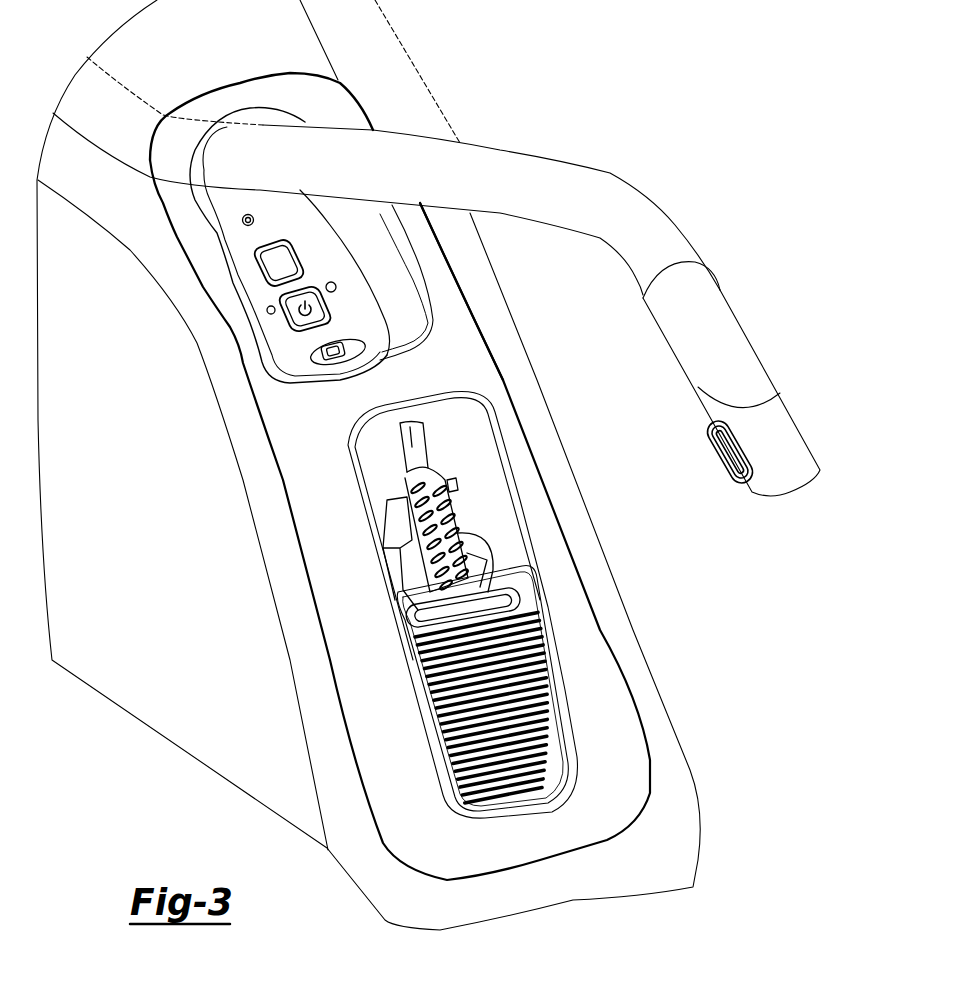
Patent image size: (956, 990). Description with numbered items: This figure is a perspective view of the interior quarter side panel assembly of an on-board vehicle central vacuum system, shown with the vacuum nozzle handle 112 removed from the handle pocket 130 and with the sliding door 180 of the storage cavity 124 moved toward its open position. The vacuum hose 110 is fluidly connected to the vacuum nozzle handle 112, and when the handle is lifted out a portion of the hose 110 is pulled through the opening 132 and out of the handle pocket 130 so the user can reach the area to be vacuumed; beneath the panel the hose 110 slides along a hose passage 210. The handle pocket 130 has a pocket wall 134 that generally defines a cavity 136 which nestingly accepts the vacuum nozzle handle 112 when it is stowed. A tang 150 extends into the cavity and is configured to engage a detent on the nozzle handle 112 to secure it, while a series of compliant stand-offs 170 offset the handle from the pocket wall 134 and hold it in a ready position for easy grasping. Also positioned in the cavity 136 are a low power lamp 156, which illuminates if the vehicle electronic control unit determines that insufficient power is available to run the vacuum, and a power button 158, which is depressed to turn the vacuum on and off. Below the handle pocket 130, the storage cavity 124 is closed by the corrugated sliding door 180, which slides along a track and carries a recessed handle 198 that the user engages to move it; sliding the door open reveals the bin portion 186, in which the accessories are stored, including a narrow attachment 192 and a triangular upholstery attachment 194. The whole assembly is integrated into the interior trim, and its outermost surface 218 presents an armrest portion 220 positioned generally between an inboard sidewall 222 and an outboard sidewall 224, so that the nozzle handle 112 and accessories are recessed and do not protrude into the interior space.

The vacuum hose 110 is at (627, 203).
The vacuum nozzle handle 112 is at (713, 313).
The storage cavity 124 is at (513, 547).
The handle pocket 130 is at (413, 300).
The opening 132 is at (437, 340).
The pocket wall 134 is at (337, 228).
The cavity 136 is at (377, 253).
The tang 150 is at (340, 355).
The low power lamp 156 is at (270, 248).
The power button 158 is at (318, 315).
The stand-offs 170 is at (244, 215).
The sliding door 180 is at (507, 668).
The bin portion 186 is at (483, 463).
The narrow attachment 192 is at (397, 428).
The triangular upholstery attachment 194 is at (560, 730).
The recessed handle 198 is at (497, 605).
The hose passage 210 is at (232, 198).
The outermost surface 218 is at (453, 365).
The armrest portion 220 is at (312, 467).
The inboard sidewall 222 is at (220, 735).
The outboard sidewall 224 is at (393, 63).